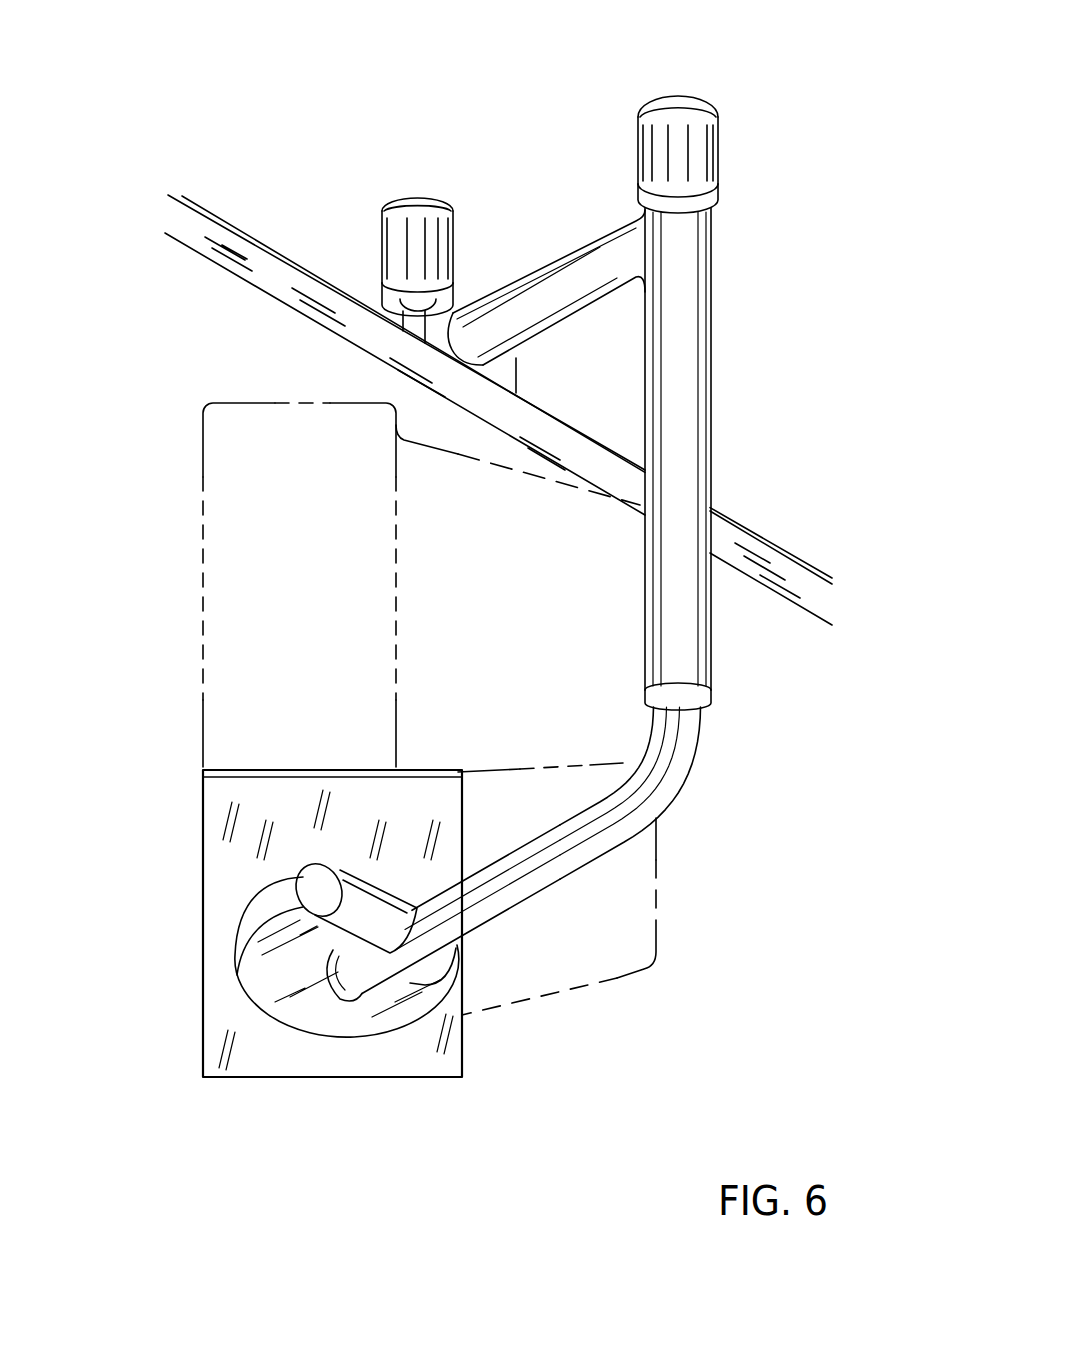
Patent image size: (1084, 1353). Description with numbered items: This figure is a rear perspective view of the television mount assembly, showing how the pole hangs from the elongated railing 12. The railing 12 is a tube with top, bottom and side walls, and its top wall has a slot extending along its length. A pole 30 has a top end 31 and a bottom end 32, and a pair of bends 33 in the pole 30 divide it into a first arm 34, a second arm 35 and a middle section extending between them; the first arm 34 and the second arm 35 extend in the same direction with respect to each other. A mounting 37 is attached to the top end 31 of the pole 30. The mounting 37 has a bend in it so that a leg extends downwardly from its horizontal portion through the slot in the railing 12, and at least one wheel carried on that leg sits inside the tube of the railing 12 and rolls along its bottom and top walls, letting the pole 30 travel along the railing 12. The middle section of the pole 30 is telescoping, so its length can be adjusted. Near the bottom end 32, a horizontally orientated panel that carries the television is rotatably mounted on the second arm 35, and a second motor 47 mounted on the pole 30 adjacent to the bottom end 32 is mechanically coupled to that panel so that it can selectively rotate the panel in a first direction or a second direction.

The railing 12 is at (260, 293).
The pole 30 is at (711, 392).
The top end 31 is at (450, 313).
The bottom end 32 is at (340, 983).
The bends 33 is at (633, 263).
The first arm 34 is at (572, 272).
The second arm 35 is at (555, 885).
The mounting 37 is at (437, 333).
The second motor 47 is at (308, 880).